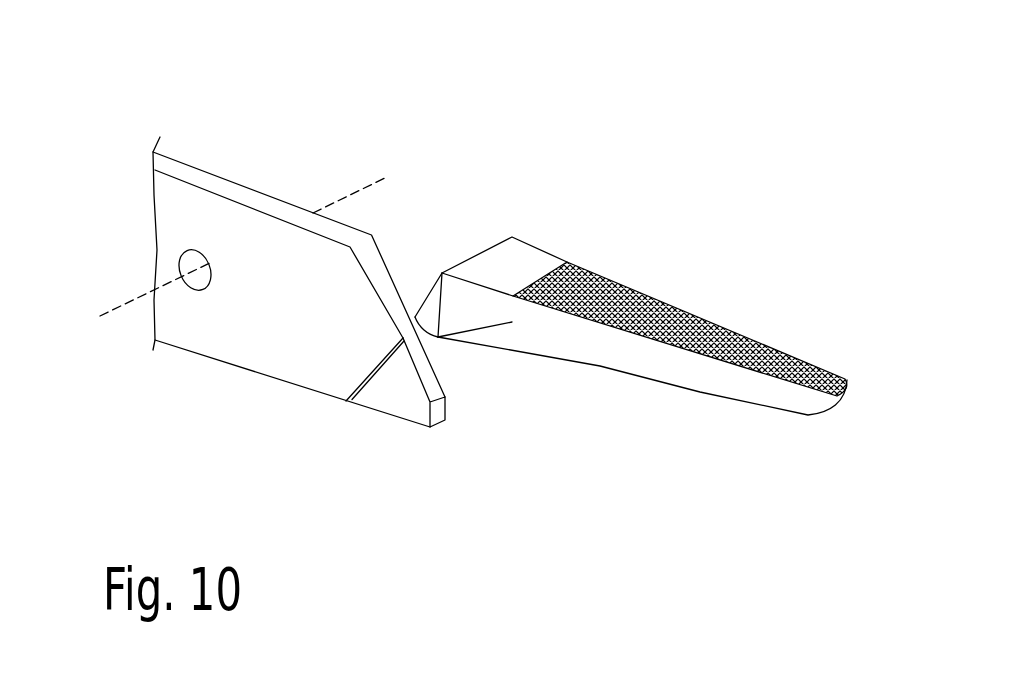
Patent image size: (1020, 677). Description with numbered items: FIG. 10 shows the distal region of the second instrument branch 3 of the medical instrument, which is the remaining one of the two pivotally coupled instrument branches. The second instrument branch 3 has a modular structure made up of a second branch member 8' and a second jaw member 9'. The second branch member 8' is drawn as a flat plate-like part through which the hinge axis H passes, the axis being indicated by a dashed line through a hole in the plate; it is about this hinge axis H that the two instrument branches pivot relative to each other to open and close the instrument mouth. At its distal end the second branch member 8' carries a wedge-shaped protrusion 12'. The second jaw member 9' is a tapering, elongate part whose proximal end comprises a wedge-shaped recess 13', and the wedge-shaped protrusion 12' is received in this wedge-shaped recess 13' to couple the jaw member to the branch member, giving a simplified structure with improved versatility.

The second instrument branch 3 is at (489, 107).
The second branch member 8' is at (257, 344).
The second jaw member 9' is at (631, 305).
The wedge-shaped protrusion 12' is at (395, 445).
The wedge-shaped recess 13' is at (492, 215).
The hinge axis H is at (110, 312).